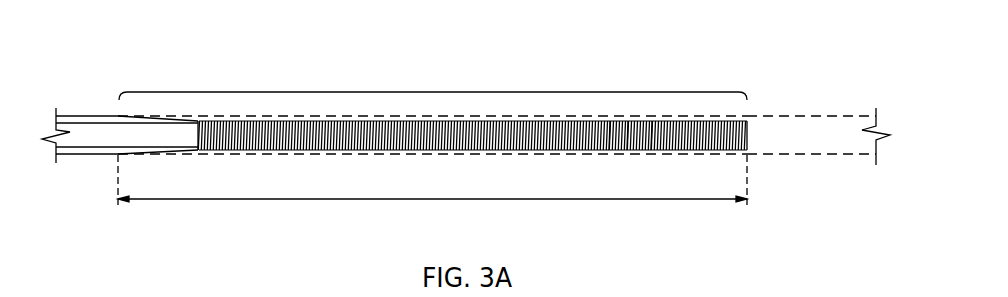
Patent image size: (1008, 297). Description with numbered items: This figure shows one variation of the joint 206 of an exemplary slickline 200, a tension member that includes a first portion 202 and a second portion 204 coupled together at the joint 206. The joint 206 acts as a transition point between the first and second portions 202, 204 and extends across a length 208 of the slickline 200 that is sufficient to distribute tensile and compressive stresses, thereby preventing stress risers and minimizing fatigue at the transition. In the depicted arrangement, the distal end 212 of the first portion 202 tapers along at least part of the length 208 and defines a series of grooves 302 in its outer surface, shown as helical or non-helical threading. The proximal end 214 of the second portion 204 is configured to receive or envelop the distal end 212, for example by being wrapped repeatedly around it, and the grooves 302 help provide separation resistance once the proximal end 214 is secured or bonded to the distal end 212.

The slickline 200 is at (708, 63).
The first portion 202 is at (80, 110).
The second portion 204 is at (811, 112).
The joint 206 is at (433, 81).
The length 208 is at (247, 199).
The distal end 212 is at (489, 144).
The proximal end 214 is at (382, 154).
The grooves 302 is at (652, 122).